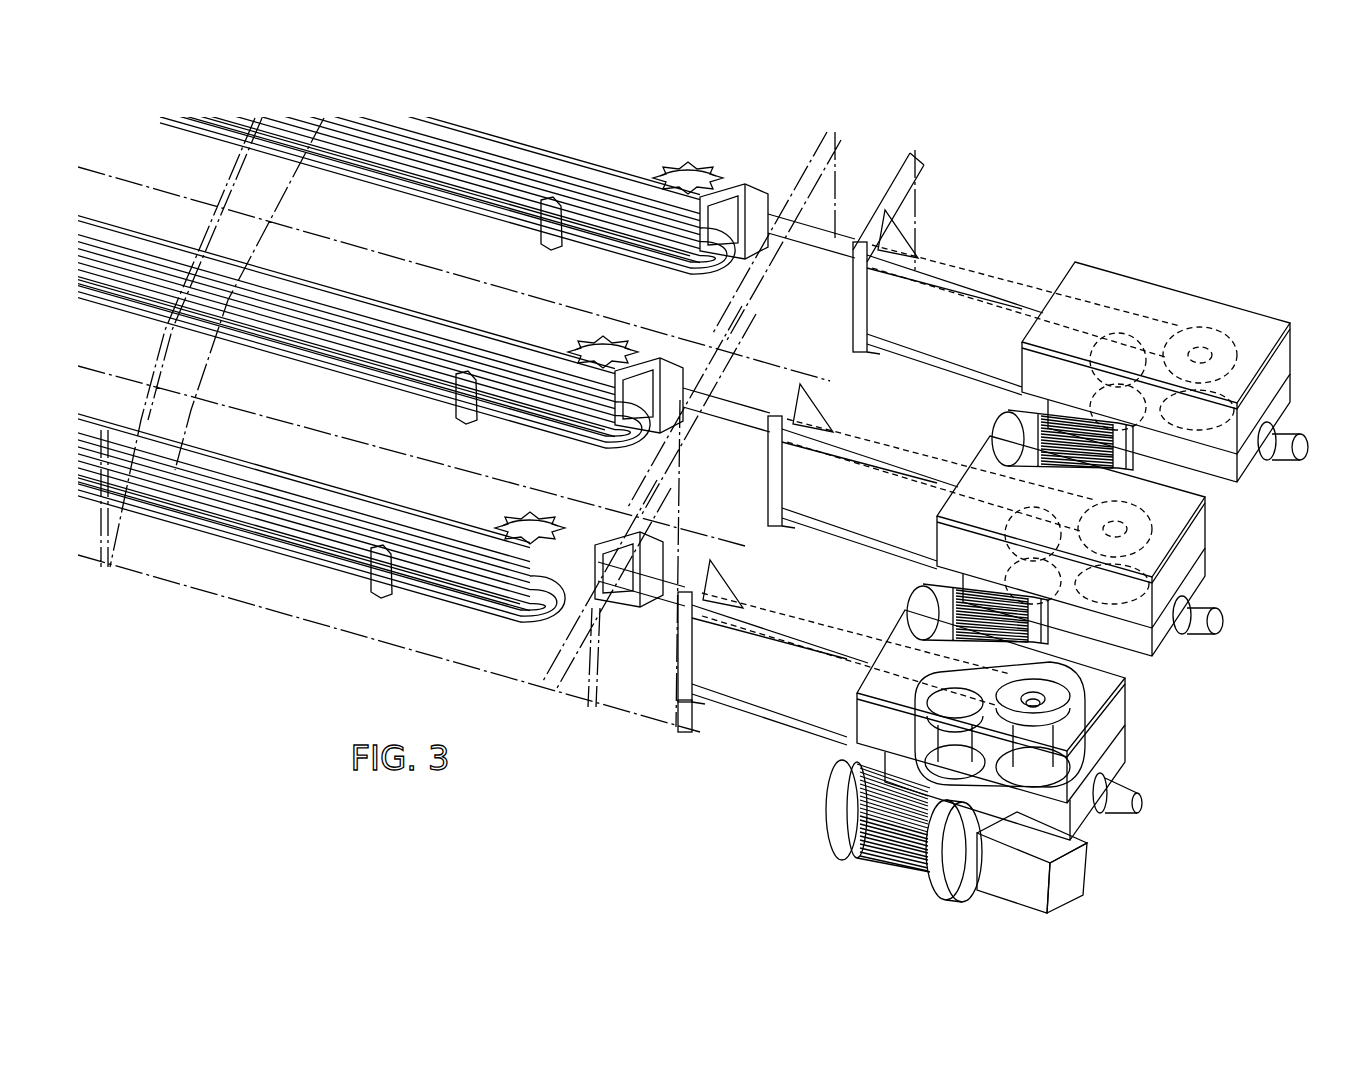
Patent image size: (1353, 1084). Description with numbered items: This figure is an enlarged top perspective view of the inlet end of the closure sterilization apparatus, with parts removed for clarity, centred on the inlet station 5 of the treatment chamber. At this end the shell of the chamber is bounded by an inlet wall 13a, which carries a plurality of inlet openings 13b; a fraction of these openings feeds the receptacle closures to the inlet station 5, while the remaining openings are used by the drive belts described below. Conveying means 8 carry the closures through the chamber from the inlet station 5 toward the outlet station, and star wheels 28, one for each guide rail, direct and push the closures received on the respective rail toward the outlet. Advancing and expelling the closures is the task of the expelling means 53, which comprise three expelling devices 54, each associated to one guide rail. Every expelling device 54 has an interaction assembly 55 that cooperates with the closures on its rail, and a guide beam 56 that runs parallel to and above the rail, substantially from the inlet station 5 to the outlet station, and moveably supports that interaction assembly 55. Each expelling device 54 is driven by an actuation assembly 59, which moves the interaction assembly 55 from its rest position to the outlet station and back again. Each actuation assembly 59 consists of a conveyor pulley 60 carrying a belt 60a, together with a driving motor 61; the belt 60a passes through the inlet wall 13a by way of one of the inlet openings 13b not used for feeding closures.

The inlet station 5 is at (688, 350).
The conveying means 8 is at (750, 128).
The inlet wall 13a is at (840, 198).
The inlet openings 13b is at (838, 208).
The star wheel 28 is at (700, 168).
The expelling means 53 is at (1255, 232).
The expelling device 54 is at (1290, 318).
The interaction assembly 55 is at (775, 232).
The guide beam 56 is at (570, 167).
The actuation assembly 59 is at (1068, 252).
The conveyor pulley 60 is at (1183, 318).
The belt 60a is at (1012, 257).
The driving motor 61 is at (1022, 437).